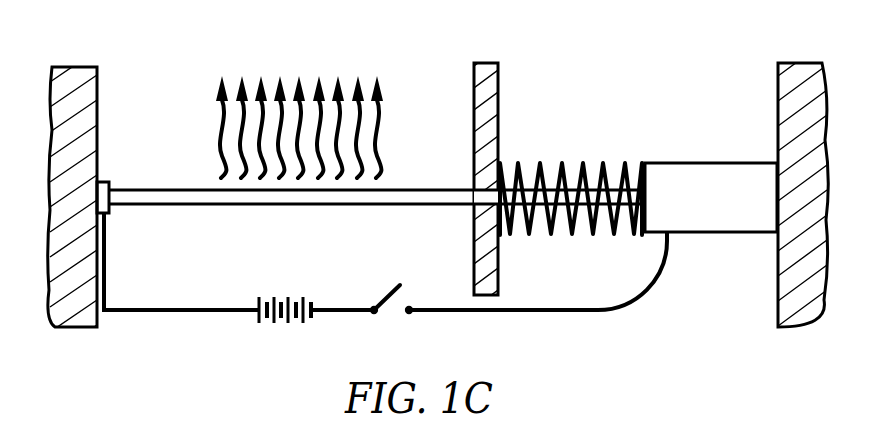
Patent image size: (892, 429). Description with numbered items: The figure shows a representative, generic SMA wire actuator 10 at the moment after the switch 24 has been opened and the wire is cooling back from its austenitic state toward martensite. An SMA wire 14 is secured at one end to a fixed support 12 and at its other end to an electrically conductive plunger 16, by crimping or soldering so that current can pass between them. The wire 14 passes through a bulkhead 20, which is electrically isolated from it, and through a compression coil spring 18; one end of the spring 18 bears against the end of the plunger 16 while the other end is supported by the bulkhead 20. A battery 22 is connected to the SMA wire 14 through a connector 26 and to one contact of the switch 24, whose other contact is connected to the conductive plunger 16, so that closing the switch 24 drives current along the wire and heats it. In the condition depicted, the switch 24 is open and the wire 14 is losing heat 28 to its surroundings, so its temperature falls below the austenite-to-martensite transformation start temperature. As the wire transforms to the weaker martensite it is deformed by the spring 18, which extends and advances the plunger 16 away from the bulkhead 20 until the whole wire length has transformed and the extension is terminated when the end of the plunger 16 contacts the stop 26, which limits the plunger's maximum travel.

The actuator assembly 10 is at (667, 71).
The support 12 is at (72, 78).
The SMA wire 14 is at (248, 204).
The plunger 16 is at (727, 163).
The compression coil spring 18 is at (563, 168).
The bulkhead 20 is at (498, 128).
The battery 22 is at (272, 322).
The switch 24 is at (383, 296).
The stop 26 is at (778, 293).
The heat 28 is at (372, 135).